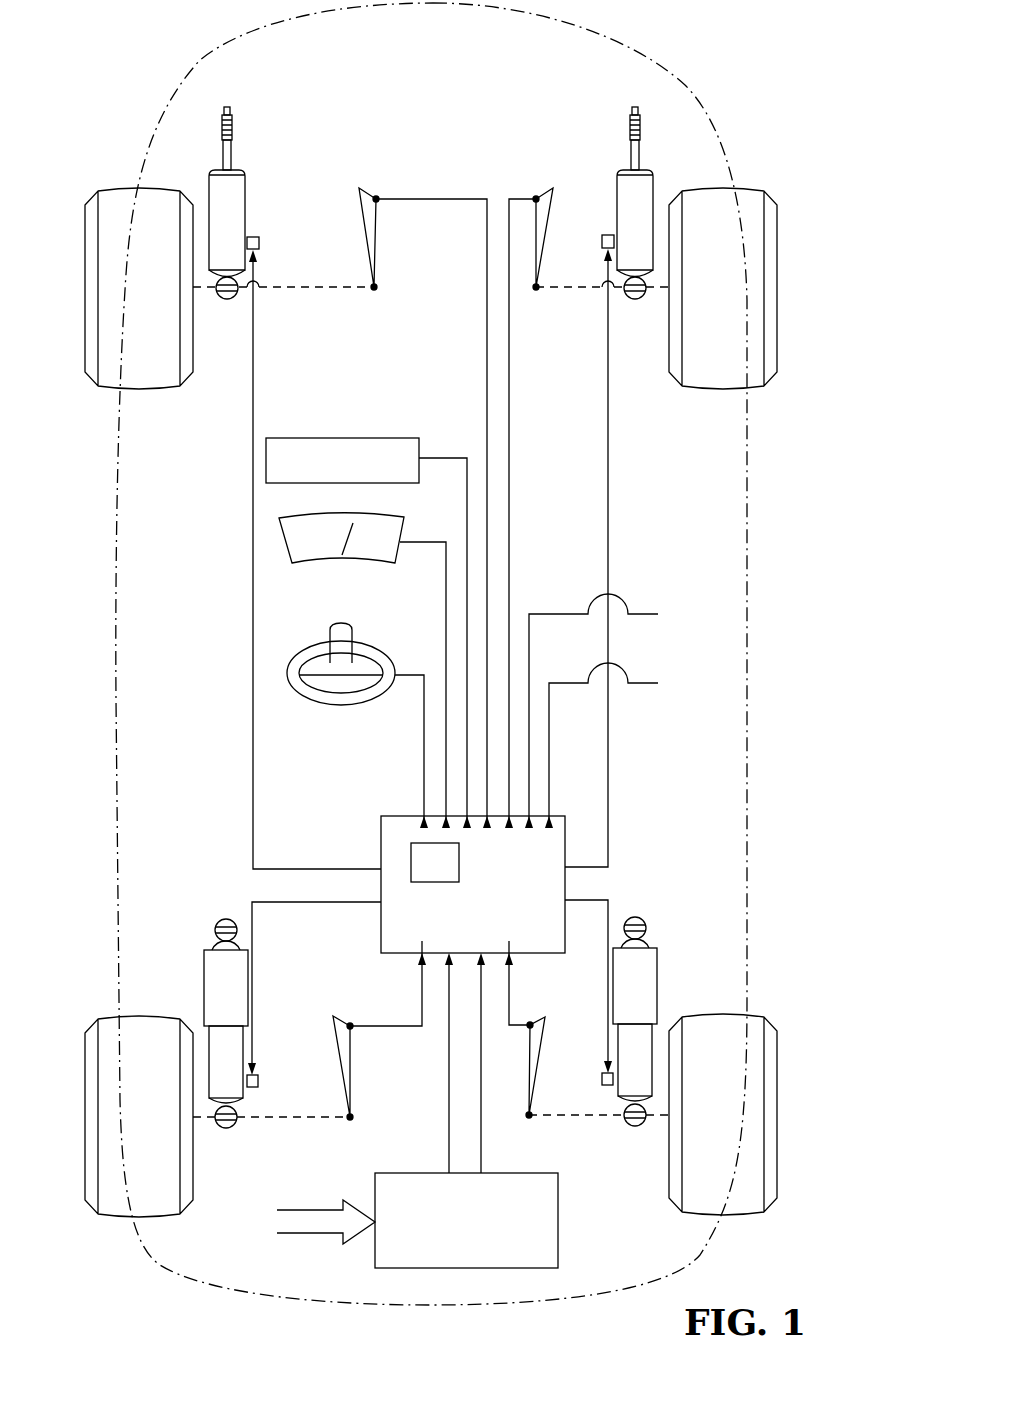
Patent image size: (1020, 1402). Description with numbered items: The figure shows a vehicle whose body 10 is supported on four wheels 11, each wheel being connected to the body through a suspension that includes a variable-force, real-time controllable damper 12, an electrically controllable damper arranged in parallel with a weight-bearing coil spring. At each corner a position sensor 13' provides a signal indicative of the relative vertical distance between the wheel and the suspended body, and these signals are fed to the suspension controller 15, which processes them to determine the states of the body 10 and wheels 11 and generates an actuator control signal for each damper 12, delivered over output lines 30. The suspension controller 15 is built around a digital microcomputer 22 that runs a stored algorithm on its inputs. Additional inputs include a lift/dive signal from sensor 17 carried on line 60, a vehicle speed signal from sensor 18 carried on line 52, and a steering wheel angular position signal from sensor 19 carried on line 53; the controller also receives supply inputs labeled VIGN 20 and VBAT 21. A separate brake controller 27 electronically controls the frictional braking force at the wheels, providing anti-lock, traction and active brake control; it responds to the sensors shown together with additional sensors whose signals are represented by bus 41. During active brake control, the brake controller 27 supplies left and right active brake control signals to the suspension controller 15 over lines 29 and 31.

The vehicle body 10 is at (676, 55).
The wheels 11 is at (113, 203).
The variable-force controllable damper 12 is at (237, 200).
The position sensor 13' is at (431, 627).
The suspension controller 15 is at (555, 850).
The lift/dive sensor 17 is at (370, 438).
The vehicle speed sensor 18 is at (302, 523).
The steering wheel angular position sensor 19 is at (305, 660).
The ignition voltage input 20 is at (637, 614).
The battery voltage input 21 is at (637, 683).
The digital microcomputer 22 is at (411, 862).
The brake controller 27 is at (558, 1238).
The left front active brake control signal line 29 is at (449, 1133).
The shock absorber control lines 30 is at (252, 768).
The right front active brake control signal line 31 is at (481, 1157).
The bus 41 is at (313, 1233).
The vehicle speed signal line 52 is at (413, 540).
The steering angle signal line 53 is at (397, 667).
The lift/dive signal line 60 is at (433, 455).